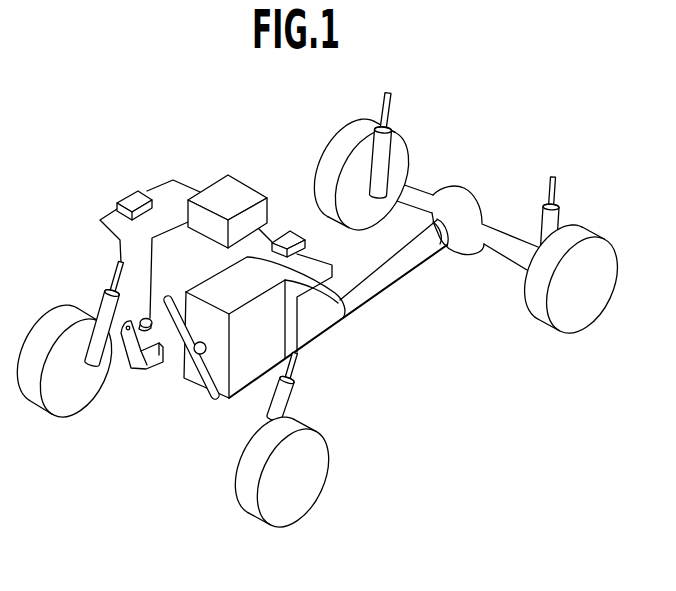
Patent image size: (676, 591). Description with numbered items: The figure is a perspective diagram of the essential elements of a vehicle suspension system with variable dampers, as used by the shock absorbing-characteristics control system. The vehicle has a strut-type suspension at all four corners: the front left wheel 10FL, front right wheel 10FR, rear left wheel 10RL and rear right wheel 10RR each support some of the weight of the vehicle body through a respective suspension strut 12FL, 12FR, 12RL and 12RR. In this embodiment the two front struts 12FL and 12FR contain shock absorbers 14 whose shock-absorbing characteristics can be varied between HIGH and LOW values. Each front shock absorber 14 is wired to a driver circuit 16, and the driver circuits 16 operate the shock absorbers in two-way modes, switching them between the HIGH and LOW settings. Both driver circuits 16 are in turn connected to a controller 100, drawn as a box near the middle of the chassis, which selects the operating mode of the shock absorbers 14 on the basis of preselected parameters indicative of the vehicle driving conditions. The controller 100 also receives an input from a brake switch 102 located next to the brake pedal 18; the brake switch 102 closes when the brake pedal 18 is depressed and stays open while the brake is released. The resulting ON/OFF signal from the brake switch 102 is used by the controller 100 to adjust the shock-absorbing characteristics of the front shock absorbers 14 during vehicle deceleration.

The front right wheel 10FR is at (85, 398).
The front left wheel 10FL is at (318, 445).
The rear right wheel 10RR is at (333, 147).
The rear left wheel 10RL is at (565, 328).
The front right suspension strut 12FR is at (107, 312).
The front left suspension strut 12FL is at (285, 397).
The rear right suspension strut 12RR is at (384, 158).
The rear left suspension strut 12RL is at (550, 225).
The shock absorber 14 is at (102, 352).
The driver circuit 16 is at (130, 198).
The brake pedal 18 is at (143, 365).
The controller 100 is at (225, 181).
The brake switch 102 is at (148, 318).